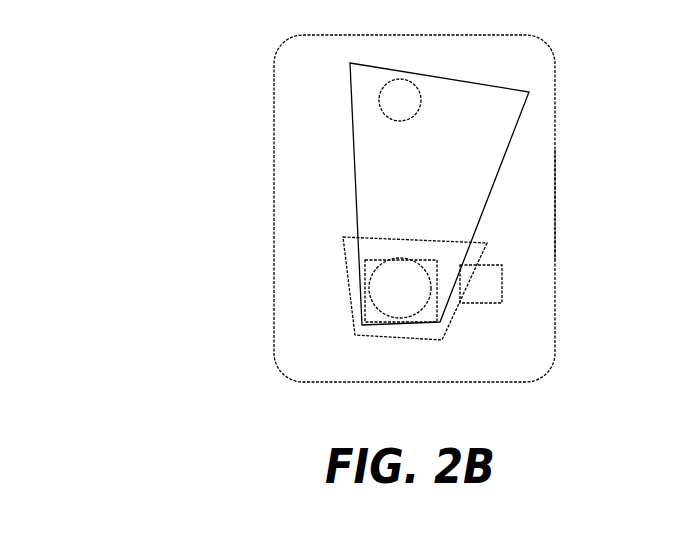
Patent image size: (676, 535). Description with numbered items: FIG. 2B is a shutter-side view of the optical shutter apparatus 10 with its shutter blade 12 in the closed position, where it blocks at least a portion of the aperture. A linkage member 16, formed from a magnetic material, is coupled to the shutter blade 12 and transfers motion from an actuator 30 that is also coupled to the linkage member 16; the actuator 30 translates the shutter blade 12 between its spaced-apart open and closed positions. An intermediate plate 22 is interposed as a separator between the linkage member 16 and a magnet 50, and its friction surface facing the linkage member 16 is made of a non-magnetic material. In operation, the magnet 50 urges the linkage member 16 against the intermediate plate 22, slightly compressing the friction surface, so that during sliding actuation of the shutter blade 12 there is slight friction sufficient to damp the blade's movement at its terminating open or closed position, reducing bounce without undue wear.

The optical shutter apparatus 10 is at (223, 214).
The shutter blade 12 is at (525, 107).
The linkage member 16 is at (352, 287).
The intermediate plate 22 is at (555, 207).
The actuator 30 is at (420, 310).
The magnet 50 is at (502, 267).